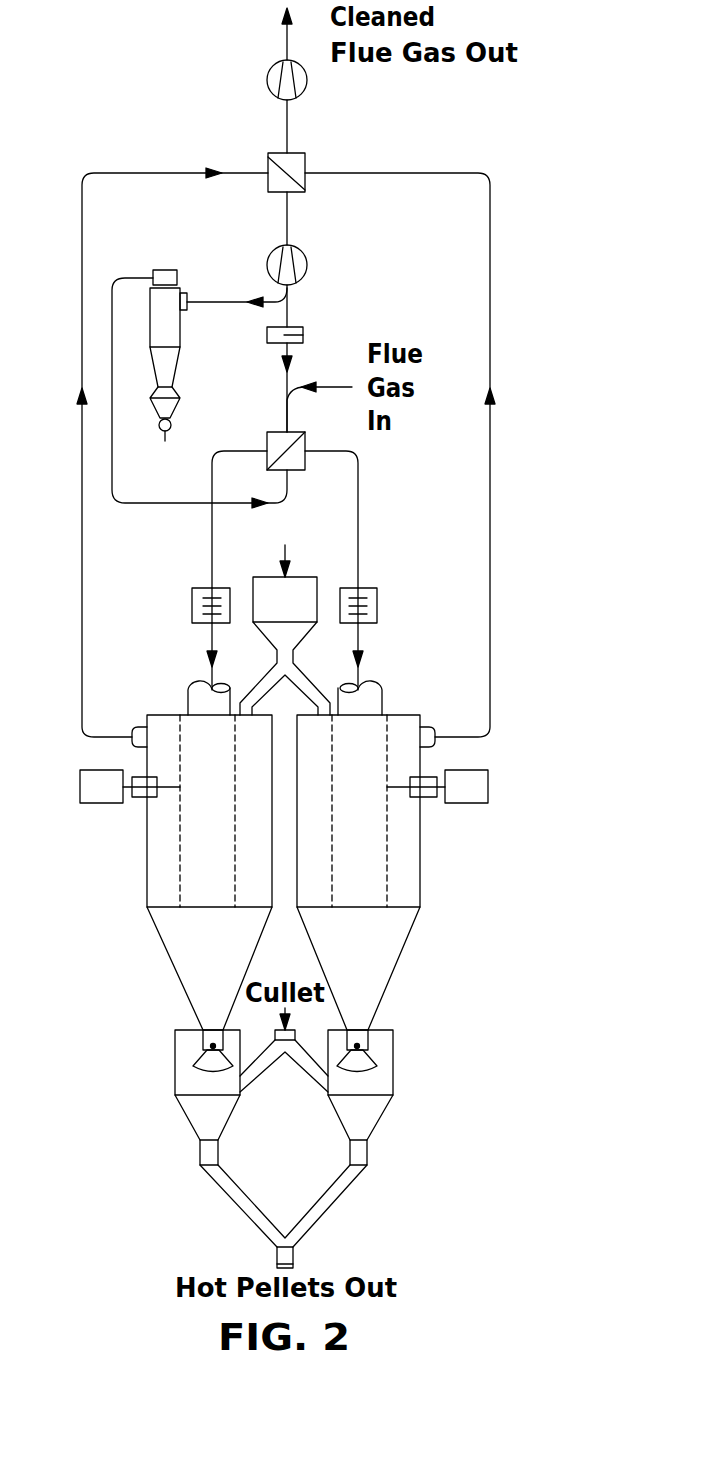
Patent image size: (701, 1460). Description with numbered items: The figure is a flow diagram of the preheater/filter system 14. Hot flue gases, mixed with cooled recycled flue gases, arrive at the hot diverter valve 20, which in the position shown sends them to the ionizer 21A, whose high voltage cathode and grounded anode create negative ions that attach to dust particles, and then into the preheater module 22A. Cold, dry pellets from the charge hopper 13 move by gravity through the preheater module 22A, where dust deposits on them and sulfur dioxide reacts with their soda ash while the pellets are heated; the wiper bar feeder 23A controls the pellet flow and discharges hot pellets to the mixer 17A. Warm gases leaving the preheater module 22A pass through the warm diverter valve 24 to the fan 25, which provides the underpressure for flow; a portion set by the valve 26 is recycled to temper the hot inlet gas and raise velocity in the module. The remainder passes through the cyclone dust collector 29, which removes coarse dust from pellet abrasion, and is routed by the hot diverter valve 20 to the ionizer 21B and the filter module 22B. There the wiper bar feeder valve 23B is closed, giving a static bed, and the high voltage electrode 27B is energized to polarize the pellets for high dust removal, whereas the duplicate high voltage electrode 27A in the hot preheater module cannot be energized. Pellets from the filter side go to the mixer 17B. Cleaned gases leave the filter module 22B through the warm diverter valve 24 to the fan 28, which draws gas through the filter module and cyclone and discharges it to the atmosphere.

The charge hopper 13 is at (300, 615).
The preheater/filter system 14 is at (492, 267).
The mixer 17A is at (185, 1116).
The mixer 17B is at (385, 1116).
The hot diverter valve 20 is at (303, 434).
The ionizer 21A is at (192, 588).
The ionizer 21B is at (372, 588).
The preheater module 22A is at (230, 832).
The filter module 22B is at (380, 832).
The wiper bar feeder 23A is at (175, 1062).
The wiper bar feeder valve 23B is at (393, 1062).
The warm diverter valve 24 is at (303, 190).
The fan 25 is at (301, 251).
The valve 26 is at (303, 338).
The high voltage electrode 27A is at (80, 781).
The high voltage electrode 27B is at (488, 790).
The fan 28 is at (306, 84).
The cyclone dust collector 29 is at (180, 328).